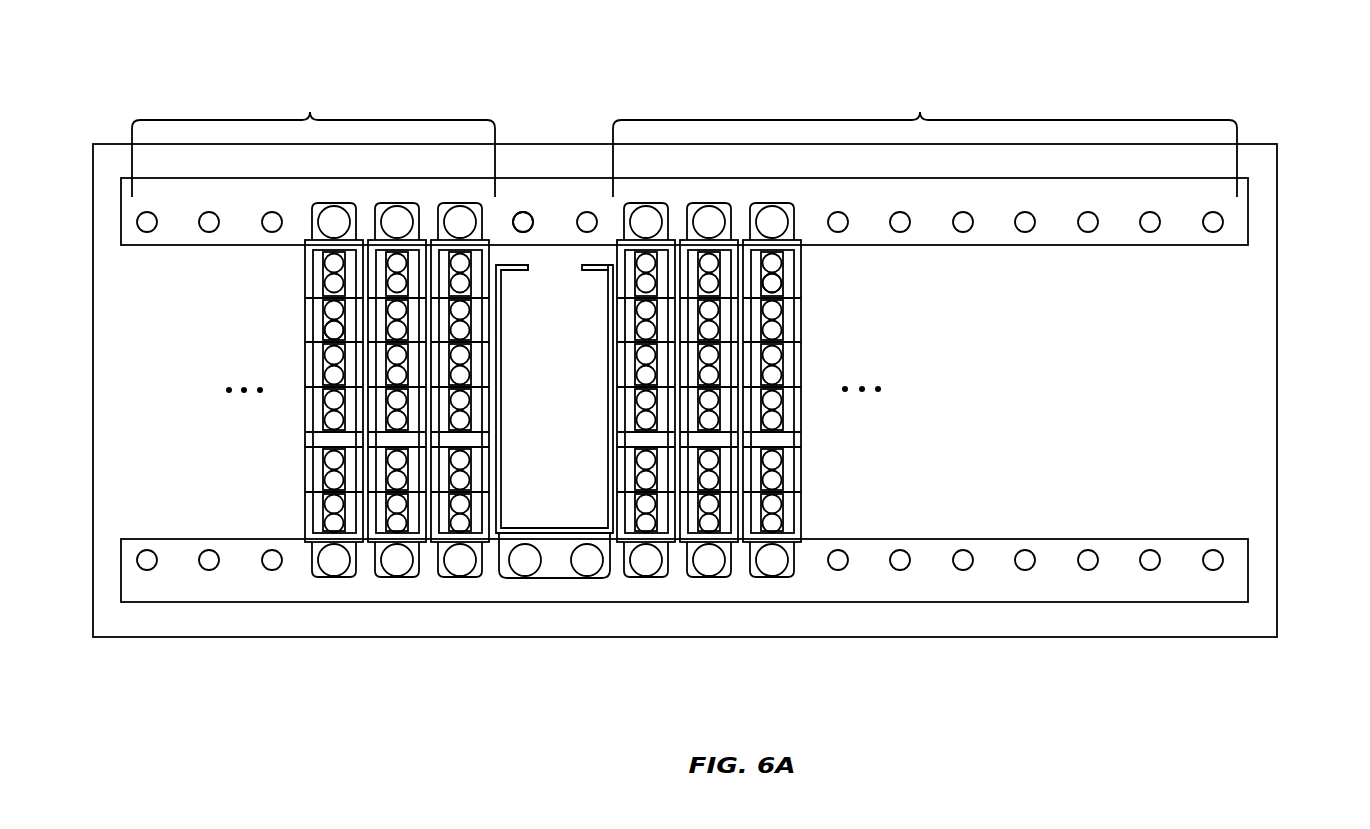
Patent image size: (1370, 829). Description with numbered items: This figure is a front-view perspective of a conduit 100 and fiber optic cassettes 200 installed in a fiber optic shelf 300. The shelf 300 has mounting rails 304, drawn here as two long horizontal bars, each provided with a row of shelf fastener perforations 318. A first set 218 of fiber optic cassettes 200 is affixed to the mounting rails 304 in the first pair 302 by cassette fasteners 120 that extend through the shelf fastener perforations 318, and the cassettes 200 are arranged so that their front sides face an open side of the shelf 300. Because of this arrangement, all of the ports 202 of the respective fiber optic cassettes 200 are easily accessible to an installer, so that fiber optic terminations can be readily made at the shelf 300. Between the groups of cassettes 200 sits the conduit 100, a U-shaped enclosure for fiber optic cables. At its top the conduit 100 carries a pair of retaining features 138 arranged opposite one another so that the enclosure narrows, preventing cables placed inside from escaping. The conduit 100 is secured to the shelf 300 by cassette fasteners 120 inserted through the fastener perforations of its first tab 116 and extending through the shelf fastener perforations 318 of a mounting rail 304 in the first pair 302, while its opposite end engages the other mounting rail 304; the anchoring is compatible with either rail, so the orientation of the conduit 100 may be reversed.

The conduit 100 is at (580, 468).
The first tab 116 is at (555, 567).
The cassette fasteners 120 is at (710, 230).
The retaining features 138 is at (597, 272).
The fiber optic cassettes 200 is at (305, 313).
The ports 202 is at (325, 328).
The first set 218 is at (684, 137).
The fiber optic shelf 300 is at (1052, 68).
The first pair 302 is at (1108, 237).
The mounting rails 304 is at (1250, 200).
The shelf fastener perforations 318 is at (527, 212).